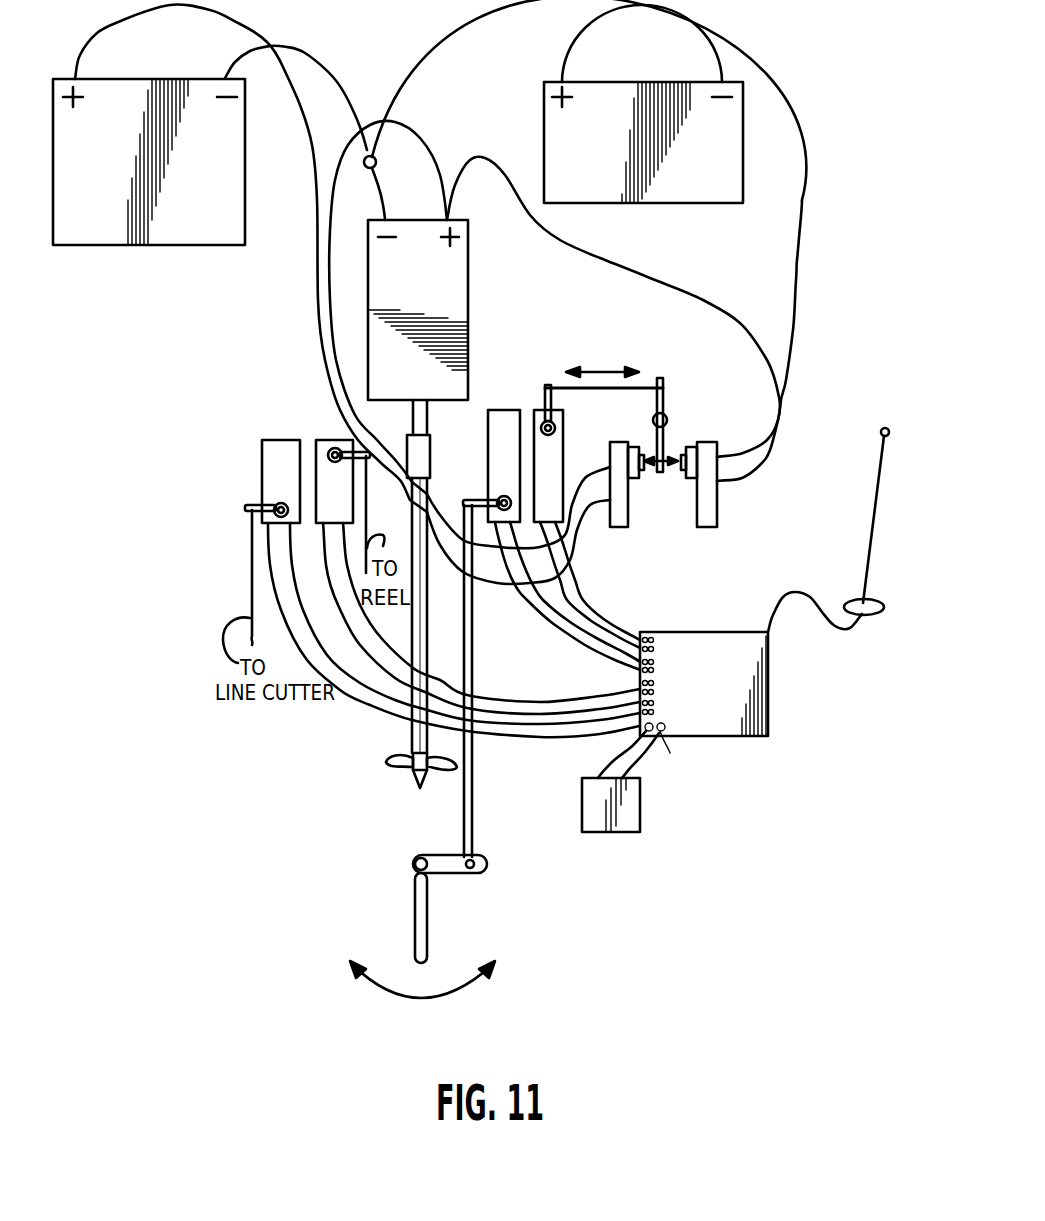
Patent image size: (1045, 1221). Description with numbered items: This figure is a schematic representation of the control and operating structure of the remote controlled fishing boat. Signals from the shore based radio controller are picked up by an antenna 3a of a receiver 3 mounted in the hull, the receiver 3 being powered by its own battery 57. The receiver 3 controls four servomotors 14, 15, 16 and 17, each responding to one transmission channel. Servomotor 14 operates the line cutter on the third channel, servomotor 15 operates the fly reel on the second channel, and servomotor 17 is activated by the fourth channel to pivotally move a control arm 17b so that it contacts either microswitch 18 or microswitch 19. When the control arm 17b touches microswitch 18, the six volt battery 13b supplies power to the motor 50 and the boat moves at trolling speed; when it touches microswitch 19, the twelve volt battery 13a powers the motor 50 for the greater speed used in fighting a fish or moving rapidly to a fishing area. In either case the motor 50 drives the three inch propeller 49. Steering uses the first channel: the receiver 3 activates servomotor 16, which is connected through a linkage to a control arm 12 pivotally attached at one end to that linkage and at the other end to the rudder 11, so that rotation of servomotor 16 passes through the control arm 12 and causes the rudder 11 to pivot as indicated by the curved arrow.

The 6 volt battery 13b is at (123, 230).
The 12 volt battery 13a is at (683, 190).
The motor 50 is at (452, 295).
The propeller 49 is at (385, 764).
The servomotor 14 is at (278, 446).
The servomotor 15 is at (338, 446).
The servomotor 16 is at (506, 414).
The servomotor 17 is at (557, 443).
The control arm 17b is at (665, 402).
The microswitch 18 is at (617, 510).
The microswitch 19 is at (708, 510).
The receiver 3 is at (762, 697).
The antenna 3a is at (868, 541).
The battery 57 is at (630, 818).
The control arm 12 is at (490, 858).
The rudder 11 is at (424, 938).